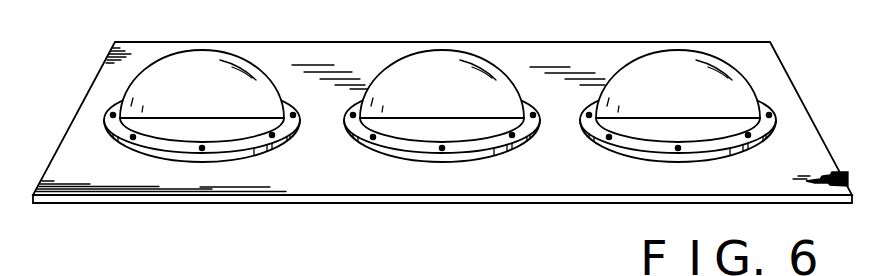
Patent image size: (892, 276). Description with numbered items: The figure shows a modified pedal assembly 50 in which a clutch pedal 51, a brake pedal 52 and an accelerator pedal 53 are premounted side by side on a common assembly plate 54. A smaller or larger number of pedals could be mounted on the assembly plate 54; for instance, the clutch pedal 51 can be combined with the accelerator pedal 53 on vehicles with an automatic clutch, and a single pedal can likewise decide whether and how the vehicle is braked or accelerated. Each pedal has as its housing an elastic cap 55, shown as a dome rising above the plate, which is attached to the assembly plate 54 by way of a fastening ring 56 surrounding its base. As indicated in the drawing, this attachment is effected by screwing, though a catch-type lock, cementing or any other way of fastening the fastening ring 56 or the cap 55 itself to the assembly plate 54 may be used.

The modified pedal assembly 50 is at (442, 125).
The clutch pedal 51 is at (169, 89).
The brake pedal 52 is at (457, 70).
The accelerator pedal 53 is at (684, 62).
The assembly plate 54 is at (658, 186).
The elastic cap 55 is at (197, 58).
The fastening ring 56 is at (115, 104).